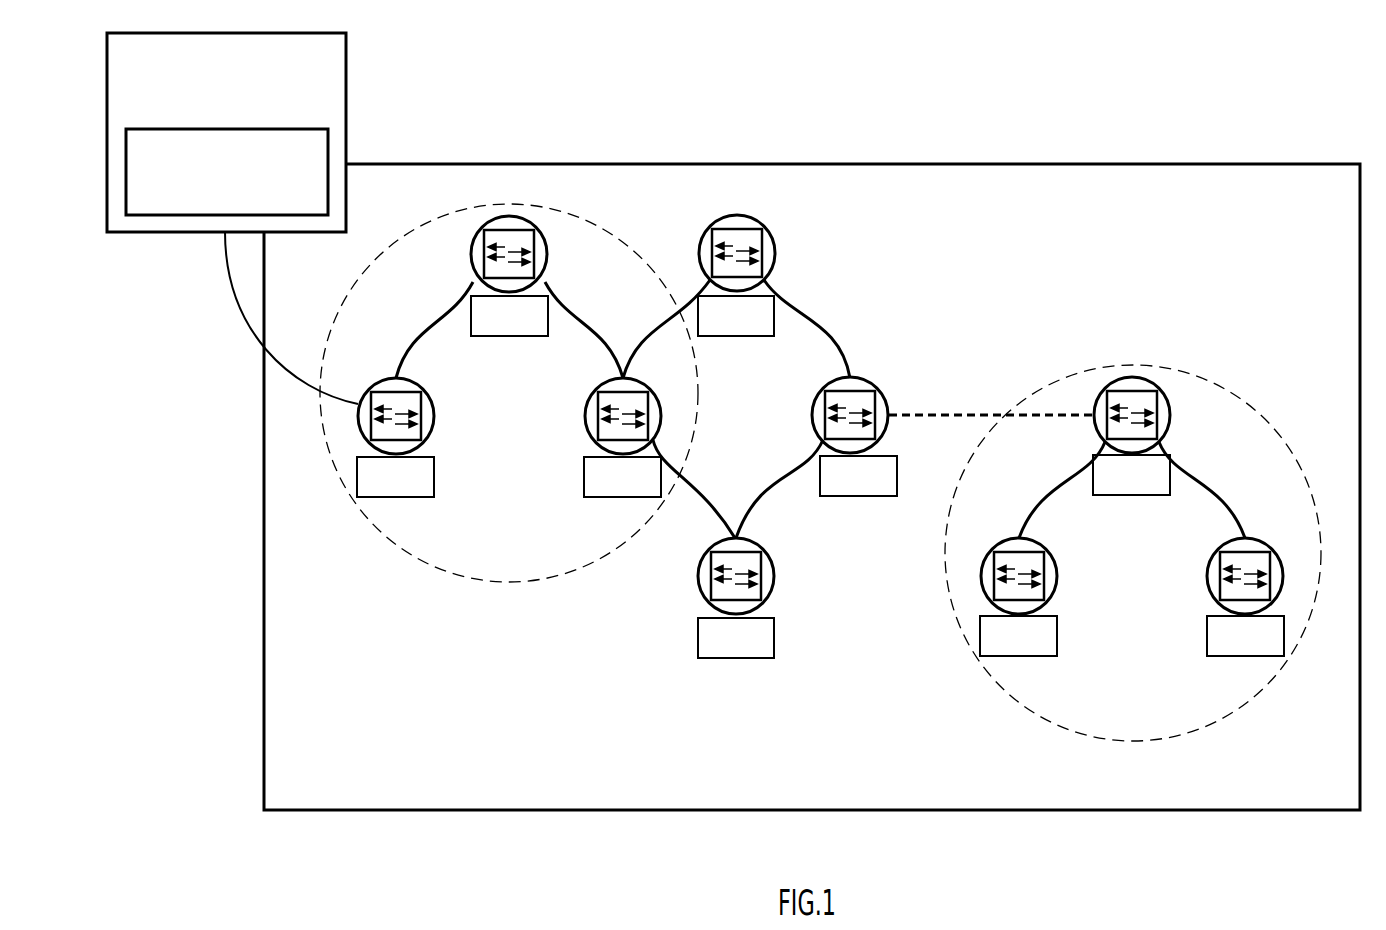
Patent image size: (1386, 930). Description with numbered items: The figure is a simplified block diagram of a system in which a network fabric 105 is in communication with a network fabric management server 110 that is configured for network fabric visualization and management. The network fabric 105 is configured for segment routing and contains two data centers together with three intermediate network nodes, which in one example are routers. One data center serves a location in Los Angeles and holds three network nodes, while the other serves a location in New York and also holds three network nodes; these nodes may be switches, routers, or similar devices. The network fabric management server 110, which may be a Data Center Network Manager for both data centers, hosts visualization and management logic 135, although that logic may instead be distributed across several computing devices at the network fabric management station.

The network fabric 105 is at (940, 164).
The network fabric management server 110 is at (346, 75).
The visualization and management logic 135 is at (346, 145).